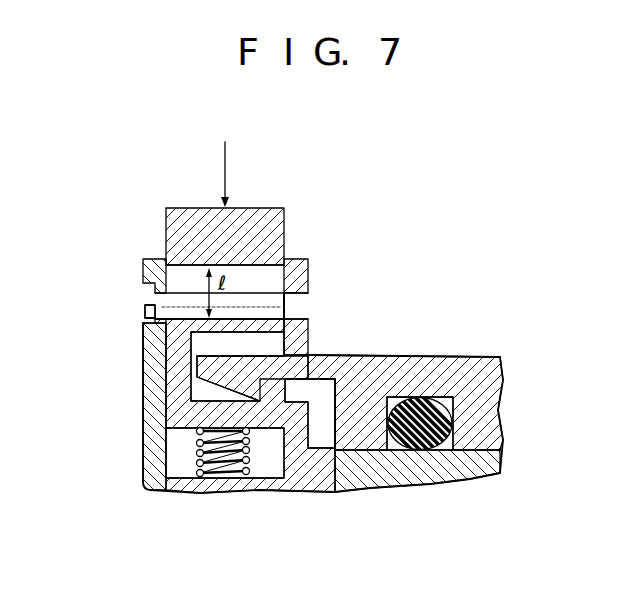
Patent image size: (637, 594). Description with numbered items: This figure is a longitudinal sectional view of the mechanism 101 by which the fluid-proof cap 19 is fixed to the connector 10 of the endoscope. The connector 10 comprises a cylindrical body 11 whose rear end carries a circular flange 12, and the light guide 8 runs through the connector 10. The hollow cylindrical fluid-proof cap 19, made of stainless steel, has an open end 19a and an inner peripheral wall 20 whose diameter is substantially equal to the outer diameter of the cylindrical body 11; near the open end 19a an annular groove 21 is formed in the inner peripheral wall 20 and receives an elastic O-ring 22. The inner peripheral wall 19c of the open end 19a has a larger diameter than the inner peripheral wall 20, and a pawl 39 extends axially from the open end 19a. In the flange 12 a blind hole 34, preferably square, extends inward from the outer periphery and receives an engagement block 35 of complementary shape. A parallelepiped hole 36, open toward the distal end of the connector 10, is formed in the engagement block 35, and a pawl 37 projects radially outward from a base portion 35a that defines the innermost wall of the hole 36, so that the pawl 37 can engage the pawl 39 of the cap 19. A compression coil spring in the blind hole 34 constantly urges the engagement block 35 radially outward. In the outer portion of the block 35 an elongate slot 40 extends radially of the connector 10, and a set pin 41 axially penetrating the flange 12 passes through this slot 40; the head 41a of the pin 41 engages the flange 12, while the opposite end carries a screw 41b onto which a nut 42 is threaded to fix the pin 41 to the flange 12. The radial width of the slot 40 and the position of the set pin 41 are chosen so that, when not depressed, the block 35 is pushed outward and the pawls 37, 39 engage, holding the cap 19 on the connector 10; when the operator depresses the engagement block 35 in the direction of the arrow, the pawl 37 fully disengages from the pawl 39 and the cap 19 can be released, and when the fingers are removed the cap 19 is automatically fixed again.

The mechanism 101 is at (216, 236).
The engagement block 35 is at (182, 225).
The nut 42 is at (300, 268).
The elongate slot 40 is at (183, 277).
The set pin 41 is at (165, 298).
The head 41a is at (147, 311).
The screw 41b is at (290, 308).
The circular flange 12 is at (152, 344).
The parallelepiped hole 36 is at (202, 343).
The pawl 39 is at (240, 370).
The pawl 37 is at (283, 384).
The inner peripheral wall 19c is at (317, 381).
The open end 19a is at (338, 400).
The fluid-proof cap 19 is at (420, 363).
The O-ring 22 is at (442, 397).
The annular groove 21 is at (441, 445).
The inner peripheral wall 20 is at (481, 442).
The base portion 35a is at (176, 413).
The light guide 8 is at (193, 453).
The blind hole 34 is at (264, 468).
The cylindrical body 11 is at (322, 478).
The connector 10 is at (135, 481).